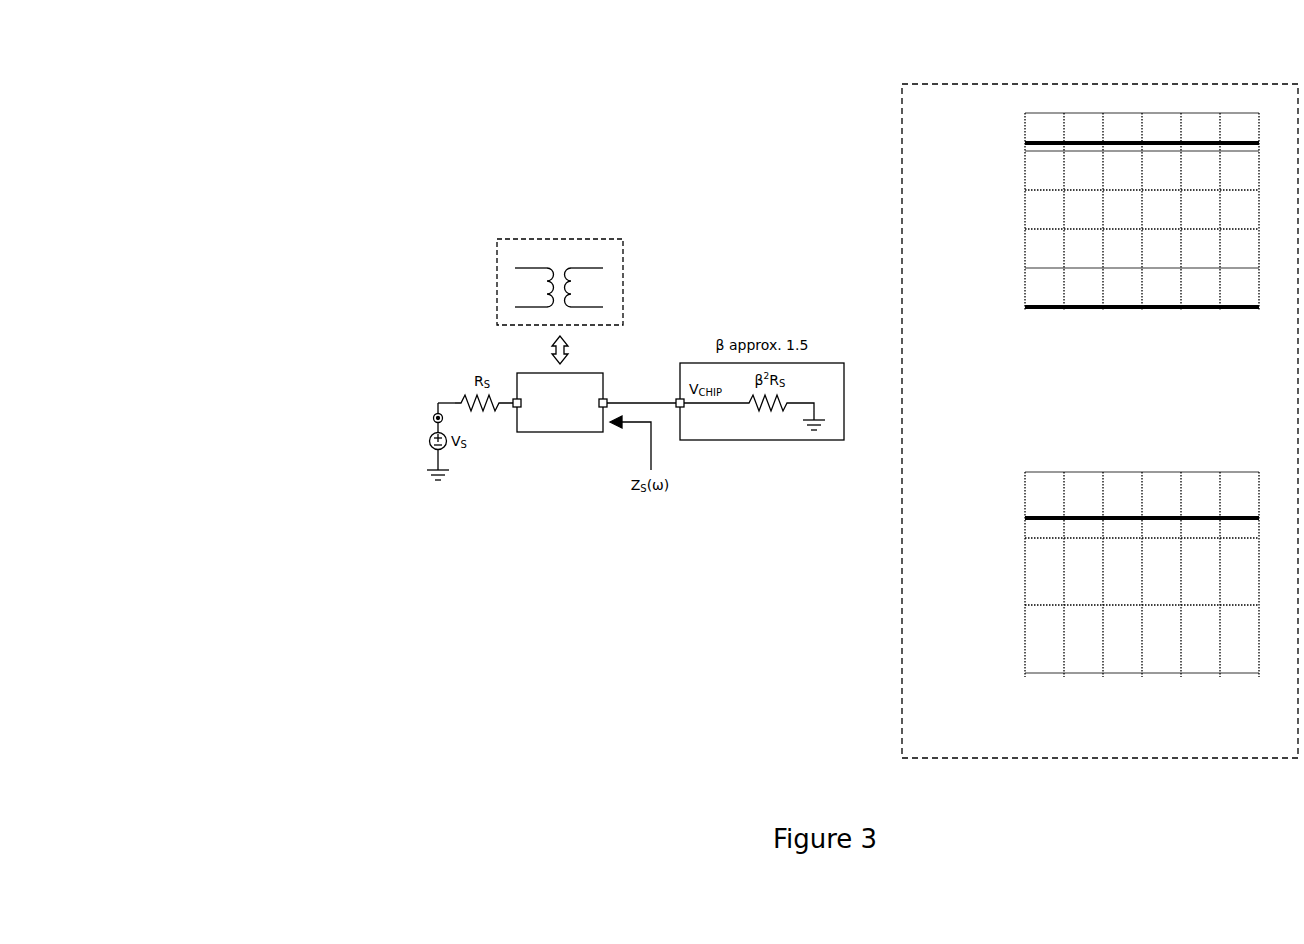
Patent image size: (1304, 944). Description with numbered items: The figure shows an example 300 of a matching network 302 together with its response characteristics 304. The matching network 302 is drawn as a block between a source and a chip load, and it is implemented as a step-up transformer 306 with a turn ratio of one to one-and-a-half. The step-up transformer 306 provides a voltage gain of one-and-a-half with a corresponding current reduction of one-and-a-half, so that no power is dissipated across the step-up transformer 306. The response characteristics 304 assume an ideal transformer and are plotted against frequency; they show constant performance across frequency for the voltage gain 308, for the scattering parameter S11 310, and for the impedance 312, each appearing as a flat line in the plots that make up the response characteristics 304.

The example 300 is at (229, 96).
The matching network 302 is at (527, 428).
The response characteristics 304 is at (1100, 421).
The step-up transformer 306 is at (497, 262).
The voltage gain 308 is at (1174, 143).
The scattering parameter S11 310 is at (1169, 305).
The impedance 312 is at (1195, 519).